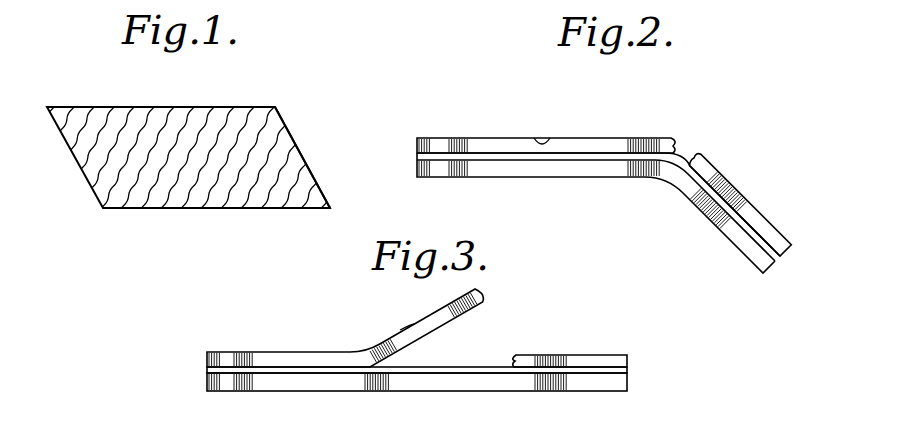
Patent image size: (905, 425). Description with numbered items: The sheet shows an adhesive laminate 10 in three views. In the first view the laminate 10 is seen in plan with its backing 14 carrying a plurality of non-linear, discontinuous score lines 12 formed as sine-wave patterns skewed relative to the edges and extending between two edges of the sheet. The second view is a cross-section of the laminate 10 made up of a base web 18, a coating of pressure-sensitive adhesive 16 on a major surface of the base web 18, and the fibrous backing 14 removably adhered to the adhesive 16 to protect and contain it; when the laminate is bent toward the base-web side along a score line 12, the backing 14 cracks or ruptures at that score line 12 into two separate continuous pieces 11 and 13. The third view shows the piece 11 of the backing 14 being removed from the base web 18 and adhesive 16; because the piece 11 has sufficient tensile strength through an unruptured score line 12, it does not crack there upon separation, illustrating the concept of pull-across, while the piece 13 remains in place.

In FIG. 1, the adhesive laminate 10 is at (223, 123).
In FIG. 2, the backing piece 11 is at (569, 182).
In FIG. 3, the backing piece 11 is at (395, 356).
In FIG. 1, the discontinuous score line 12 is at (99, 174).
In FIG. 2, the discontinuous score line 12 is at (541, 143).
In FIG. 3, the discontinuous score line 12 is at (417, 324).
In FIG. 2, the backing piece 13 is at (737, 165).
In FIG. 3, the backing piece 13 is at (566, 346).
In FIG. 1, the fibrous backing 14 is at (278, 134).
In FIG. 2, the fibrous backing 14 is at (417, 145).
In FIG. 3, the fibrous backing 14 is at (207, 360).
In FIG. 2, the coating of pressure-sensitive adhesive 16 is at (417, 156).
In FIG. 3, the coating of pressure-sensitive adhesive 16 is at (207, 370).
In FIG. 2, the base web 18 is at (417, 169).
In FIG. 3, the base web 18 is at (207, 383).